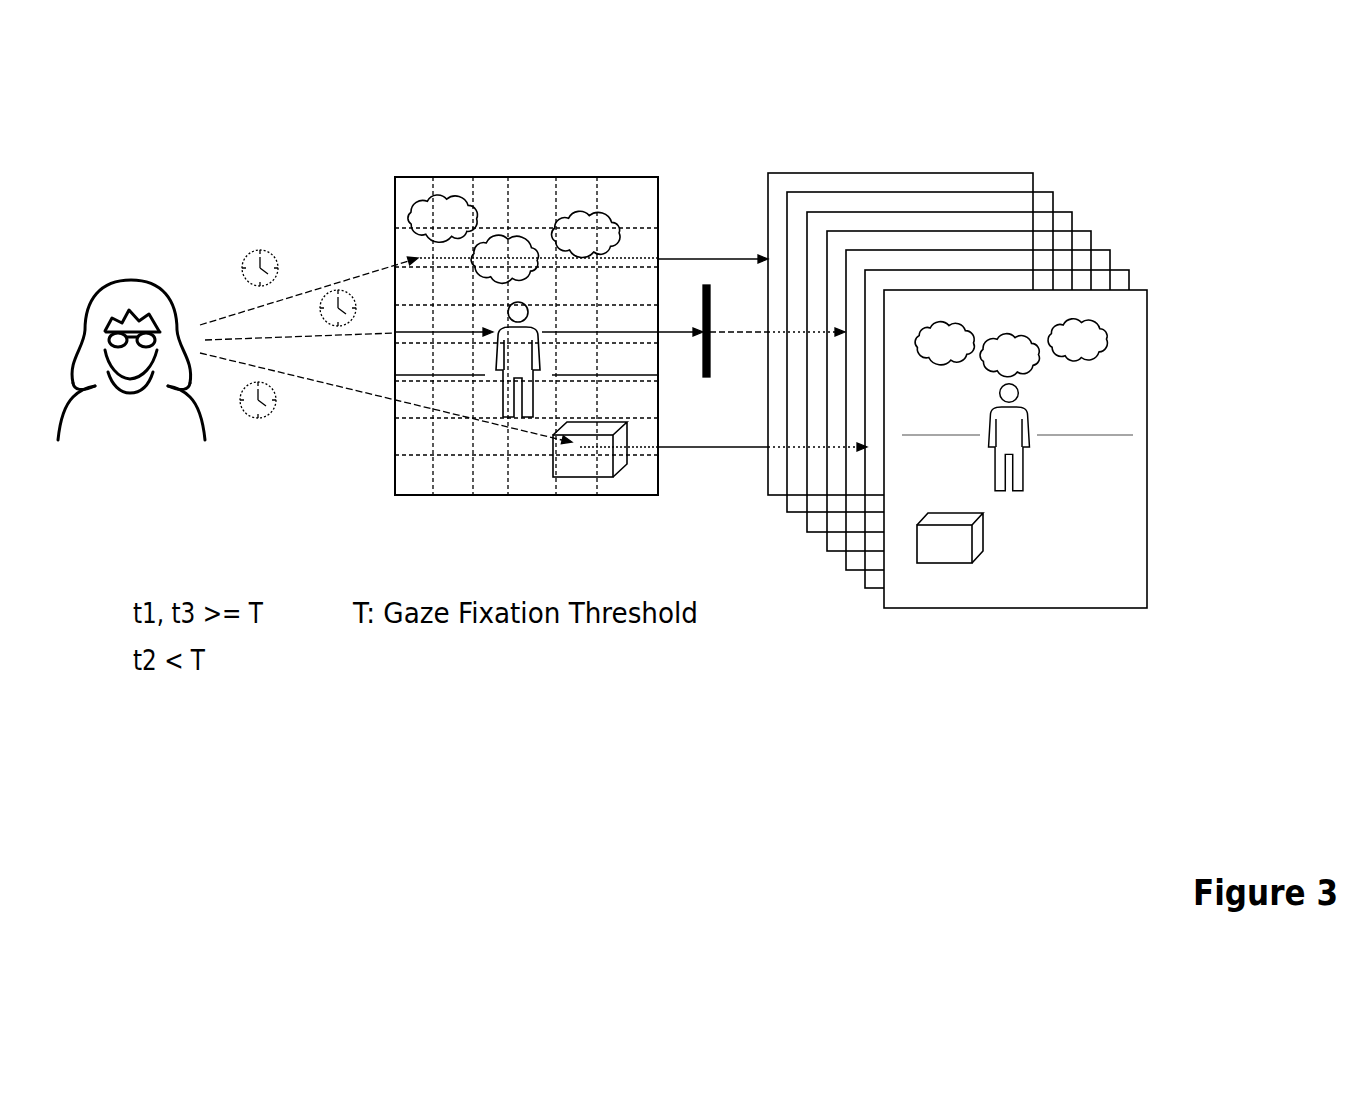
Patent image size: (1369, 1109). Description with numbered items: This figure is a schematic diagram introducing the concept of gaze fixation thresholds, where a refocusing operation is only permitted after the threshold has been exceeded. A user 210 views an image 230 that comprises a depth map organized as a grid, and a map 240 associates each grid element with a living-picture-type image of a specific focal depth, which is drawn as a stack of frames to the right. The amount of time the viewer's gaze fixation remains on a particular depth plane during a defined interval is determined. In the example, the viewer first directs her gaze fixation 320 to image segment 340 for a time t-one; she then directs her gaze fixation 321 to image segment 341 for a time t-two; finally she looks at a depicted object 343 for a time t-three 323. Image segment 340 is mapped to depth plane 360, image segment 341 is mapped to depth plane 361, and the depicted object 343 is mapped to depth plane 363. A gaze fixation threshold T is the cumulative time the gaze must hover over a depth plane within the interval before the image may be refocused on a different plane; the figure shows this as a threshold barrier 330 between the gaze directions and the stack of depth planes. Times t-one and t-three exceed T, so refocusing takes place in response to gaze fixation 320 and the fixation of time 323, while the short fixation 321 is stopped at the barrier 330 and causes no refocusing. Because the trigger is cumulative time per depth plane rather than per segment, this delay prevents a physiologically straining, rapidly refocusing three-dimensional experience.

The user 210 is at (110, 280).
The image 230 is at (612, 177).
The map 240 is at (690, 257).
The gaze fixation 320 is at (270, 250).
The gaze fixation 321 is at (345, 292).
The time t3 323 is at (258, 427).
The gaze fixation threshold filter 330 is at (712, 348).
The image segment 340 is at (418, 258).
The image segment 341 is at (487, 323).
The depicted object 343 is at (587, 450).
The depth plane 360 is at (458, 250).
The depth plane 361 is at (887, 252).
The depth plane 363 is at (1115, 272).